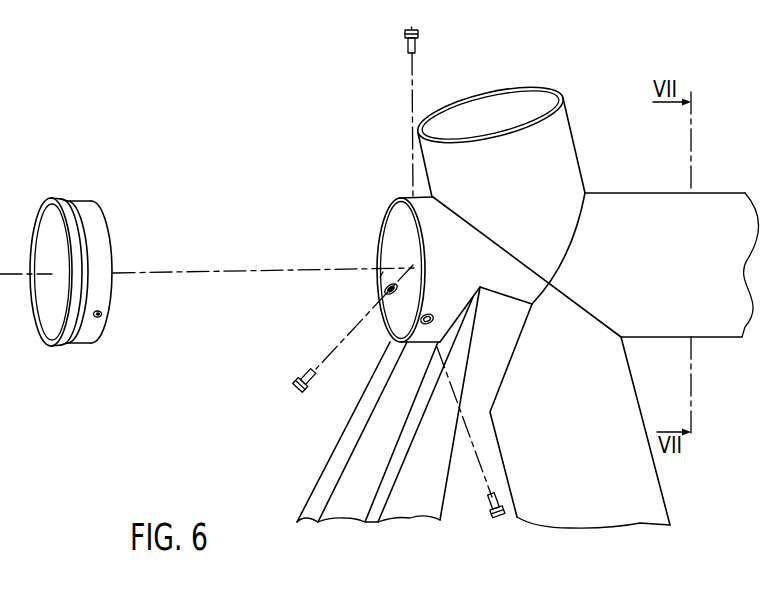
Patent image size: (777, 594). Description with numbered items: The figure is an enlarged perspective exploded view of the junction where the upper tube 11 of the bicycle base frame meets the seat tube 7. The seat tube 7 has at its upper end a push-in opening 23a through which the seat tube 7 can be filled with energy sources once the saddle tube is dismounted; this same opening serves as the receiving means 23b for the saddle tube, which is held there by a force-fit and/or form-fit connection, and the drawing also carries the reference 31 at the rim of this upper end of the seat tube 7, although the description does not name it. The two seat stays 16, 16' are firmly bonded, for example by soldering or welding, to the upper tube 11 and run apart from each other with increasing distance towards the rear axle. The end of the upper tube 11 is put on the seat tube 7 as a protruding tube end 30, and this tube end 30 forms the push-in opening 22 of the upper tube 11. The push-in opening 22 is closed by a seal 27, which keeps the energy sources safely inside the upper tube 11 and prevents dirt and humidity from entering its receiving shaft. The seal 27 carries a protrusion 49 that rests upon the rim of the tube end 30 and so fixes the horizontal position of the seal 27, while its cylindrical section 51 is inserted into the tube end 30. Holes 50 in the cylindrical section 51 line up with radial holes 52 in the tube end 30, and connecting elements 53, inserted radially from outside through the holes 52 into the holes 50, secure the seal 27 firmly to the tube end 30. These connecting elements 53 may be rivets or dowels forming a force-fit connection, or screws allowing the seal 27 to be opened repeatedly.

The seat tube 7 is at (581, 453).
The upper tube 11 is at (693, 277).
The seat stay 16 is at (429, 426).
The seat stay 16' is at (354, 432).
The push-in opening 22 is at (379, 277).
The push-in opening 23a is at (494, 106).
The receiving means 23b is at (490, 115).
The seal 27 is at (103, 214).
The tube end 30 is at (395, 227).
The riser tube 31 is at (568, 120).
The protrusion 49 is at (65, 203).
The holes 50 is at (82, 205).
The cylindrical section 51 is at (104, 243).
The radial holes 52 is at (410, 193).
The connecting elements 53 is at (420, 33).